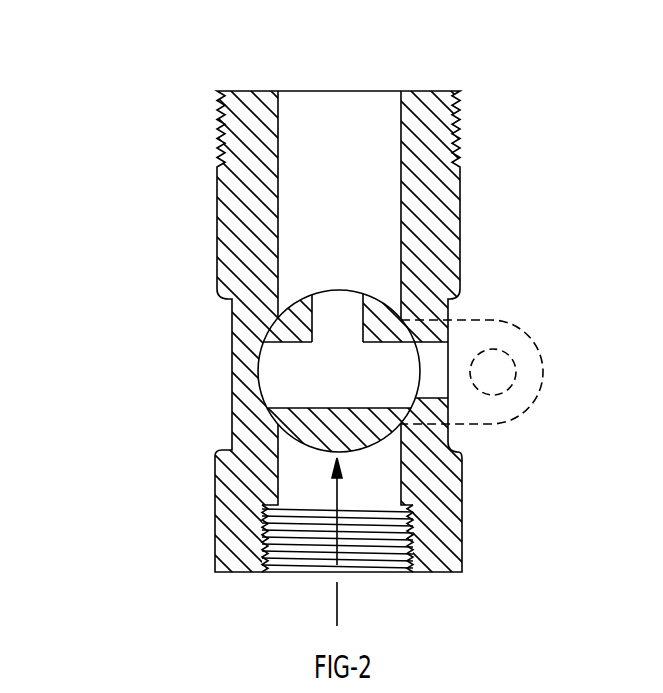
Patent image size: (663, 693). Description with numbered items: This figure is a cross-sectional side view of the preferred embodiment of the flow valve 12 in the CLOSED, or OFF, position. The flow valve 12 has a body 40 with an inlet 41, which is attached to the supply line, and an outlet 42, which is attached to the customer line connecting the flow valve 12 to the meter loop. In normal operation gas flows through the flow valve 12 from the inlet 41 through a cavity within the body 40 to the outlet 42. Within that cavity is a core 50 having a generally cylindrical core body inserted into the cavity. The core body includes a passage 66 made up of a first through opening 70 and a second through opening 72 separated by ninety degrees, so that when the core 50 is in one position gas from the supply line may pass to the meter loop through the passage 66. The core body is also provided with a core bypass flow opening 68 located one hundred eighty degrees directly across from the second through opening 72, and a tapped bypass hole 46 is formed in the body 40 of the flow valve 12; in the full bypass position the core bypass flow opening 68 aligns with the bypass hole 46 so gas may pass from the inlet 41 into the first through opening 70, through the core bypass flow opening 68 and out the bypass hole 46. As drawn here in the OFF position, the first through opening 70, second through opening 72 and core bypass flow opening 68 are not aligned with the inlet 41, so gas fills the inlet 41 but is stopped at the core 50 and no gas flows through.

The flow valve 12 is at (158, 149).
The body 40 is at (452, 508).
The inlet 41 is at (302, 573).
The outlet 42 is at (320, 90).
The tapped bypass hole 46 is at (430, 372).
The core 50 is at (278, 427).
The passage 66 is at (340, 370).
The core bypass flow opening 68 is at (282, 370).
The first through opening 70 is at (338, 310).
The second through opening 72 is at (387, 372).